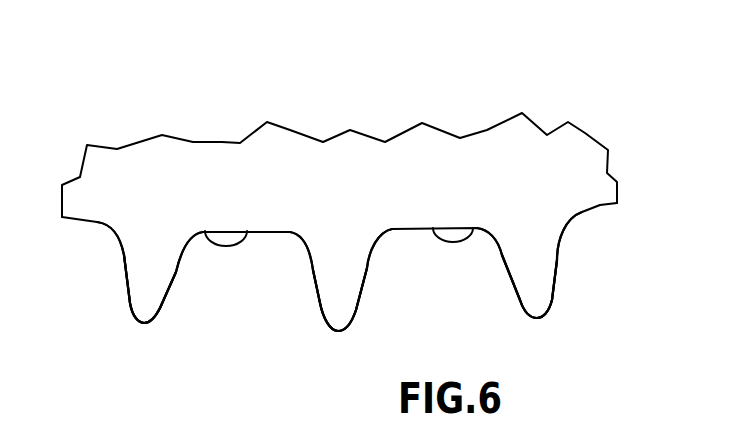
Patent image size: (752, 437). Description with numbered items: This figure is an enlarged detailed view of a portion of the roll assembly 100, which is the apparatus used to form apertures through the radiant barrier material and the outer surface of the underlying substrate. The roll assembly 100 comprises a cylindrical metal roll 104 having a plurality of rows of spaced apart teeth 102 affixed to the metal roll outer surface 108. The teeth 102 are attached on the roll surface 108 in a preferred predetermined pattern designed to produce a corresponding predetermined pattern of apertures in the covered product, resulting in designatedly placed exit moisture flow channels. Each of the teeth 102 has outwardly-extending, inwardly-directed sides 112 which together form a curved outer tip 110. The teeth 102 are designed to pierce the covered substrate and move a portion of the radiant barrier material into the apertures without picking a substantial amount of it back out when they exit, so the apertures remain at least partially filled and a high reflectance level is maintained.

The roll assembly 100 is at (341, 219).
The teeth 102 is at (148, 307).
The cylindrical metal roll 104 is at (366, 202).
The metal roll outer surface 108 is at (208, 231).
The curved outer tip 110 is at (140, 327).
The sides 112 is at (127, 273).